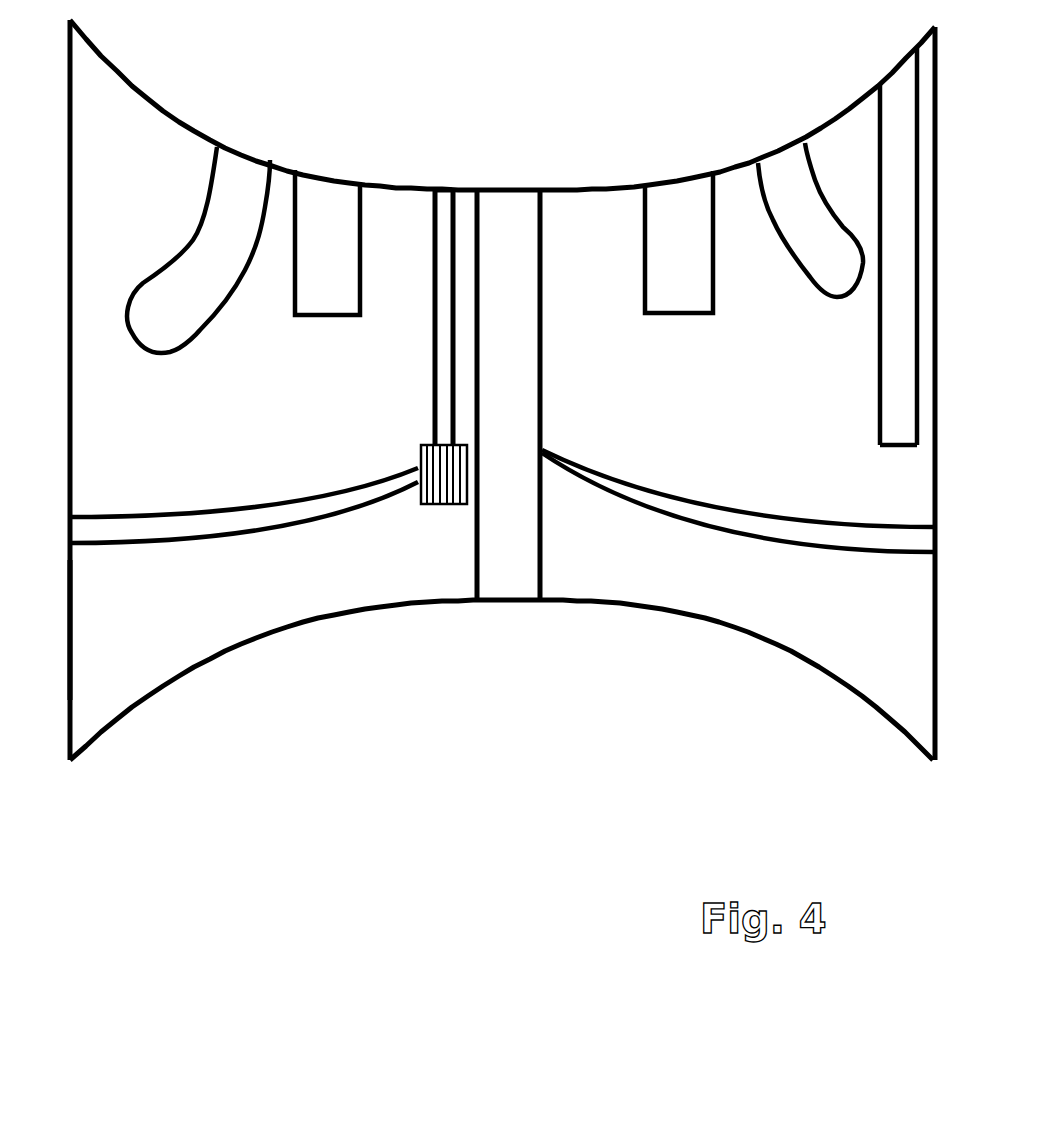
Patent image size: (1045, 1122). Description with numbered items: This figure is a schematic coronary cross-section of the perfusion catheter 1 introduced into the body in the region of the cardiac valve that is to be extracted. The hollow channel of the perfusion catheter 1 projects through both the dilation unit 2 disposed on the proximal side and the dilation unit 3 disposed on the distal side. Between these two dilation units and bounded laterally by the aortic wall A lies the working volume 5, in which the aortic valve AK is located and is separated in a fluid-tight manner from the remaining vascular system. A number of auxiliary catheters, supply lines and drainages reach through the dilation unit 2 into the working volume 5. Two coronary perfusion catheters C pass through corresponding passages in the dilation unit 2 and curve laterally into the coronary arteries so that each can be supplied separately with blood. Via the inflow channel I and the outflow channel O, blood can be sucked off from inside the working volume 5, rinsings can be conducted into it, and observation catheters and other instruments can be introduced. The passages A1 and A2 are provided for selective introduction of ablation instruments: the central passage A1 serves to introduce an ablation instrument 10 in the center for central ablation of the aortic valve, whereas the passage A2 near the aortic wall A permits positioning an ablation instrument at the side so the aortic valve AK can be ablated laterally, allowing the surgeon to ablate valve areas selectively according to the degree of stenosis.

The perfusion catheter 1 is at (492, 361).
The dilation unit 2 is at (472, 114).
The dilation unit 3 is at (467, 706).
The working volume 5 is at (624, 393).
The ablation instrument 10 is at (418, 508).
The aortic wall A is at (70, 638).
The passage A1 is at (442, 182).
The passage A2 is at (888, 80).
The aortic valve AK is at (318, 492).
The coronary perfusion catheters C is at (203, 271).
The inflow channel I is at (314, 271).
The outflow channel O is at (667, 277).